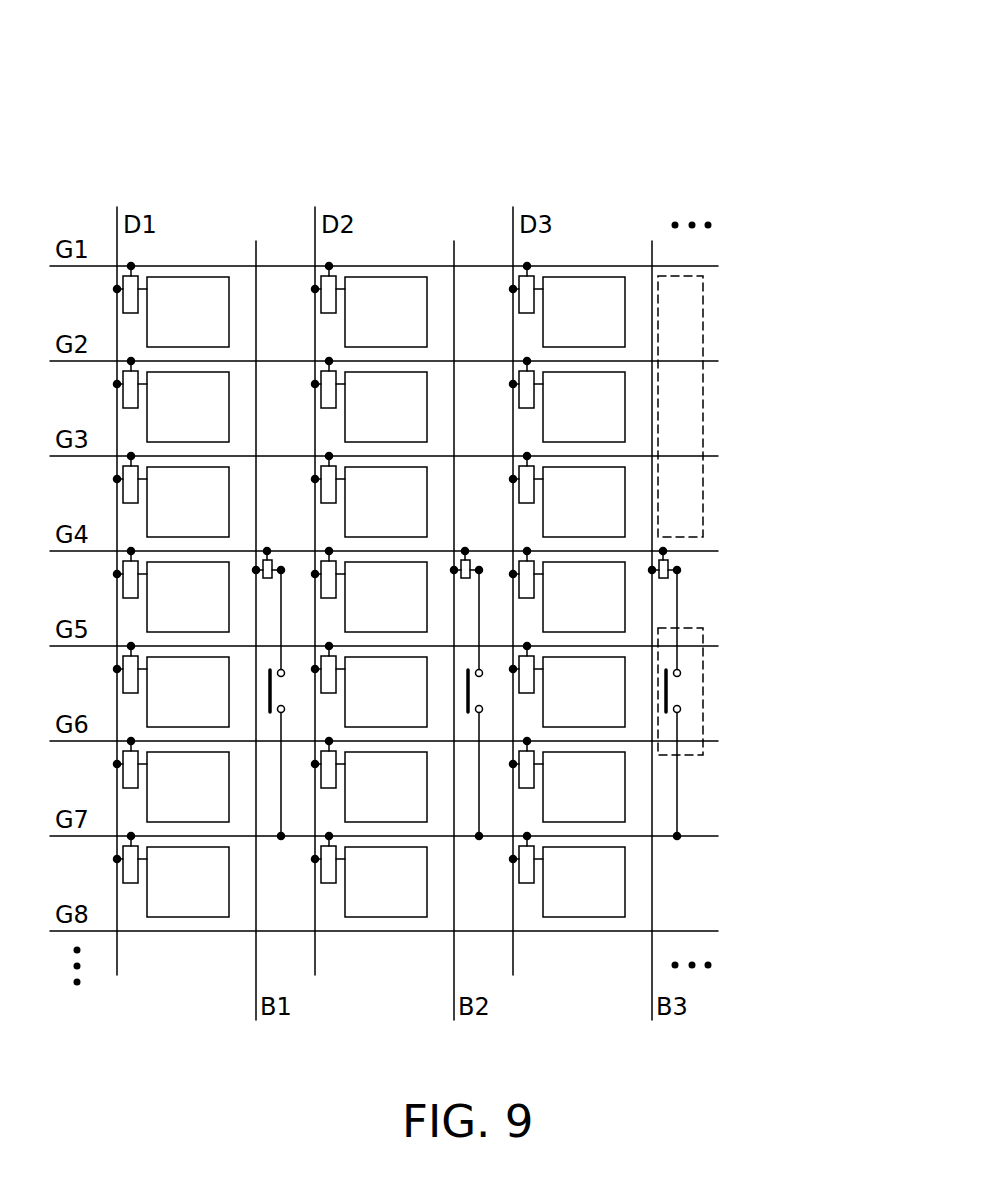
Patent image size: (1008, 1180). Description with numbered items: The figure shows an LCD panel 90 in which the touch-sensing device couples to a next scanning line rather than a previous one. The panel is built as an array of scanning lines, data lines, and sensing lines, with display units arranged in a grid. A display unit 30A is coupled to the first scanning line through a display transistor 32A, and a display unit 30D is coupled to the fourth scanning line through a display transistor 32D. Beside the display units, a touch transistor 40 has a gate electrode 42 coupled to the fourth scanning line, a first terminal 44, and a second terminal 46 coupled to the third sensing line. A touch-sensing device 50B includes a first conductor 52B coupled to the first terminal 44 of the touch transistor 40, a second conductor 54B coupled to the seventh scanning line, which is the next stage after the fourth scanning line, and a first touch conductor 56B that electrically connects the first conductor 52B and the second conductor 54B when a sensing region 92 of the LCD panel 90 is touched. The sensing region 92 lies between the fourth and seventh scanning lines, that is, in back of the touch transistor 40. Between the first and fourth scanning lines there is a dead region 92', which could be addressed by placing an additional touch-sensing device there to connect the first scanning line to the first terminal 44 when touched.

The LCD panel 90 is at (195, 70).
The display unit 30A is at (600, 290).
The display transistor 32A is at (541, 268).
The display unit 30D is at (603, 572).
The display transistor 32D is at (532, 568).
The touch transistor 40 is at (748, 571).
The gate electrode 42 is at (673, 542).
The first terminal 44 is at (728, 574).
The second terminal 46 is at (658, 580).
The touch-sensing device 50B is at (778, 694).
The first conductor 52B is at (695, 671).
The second conductor 54B is at (740, 730).
The first touch conductor 56B is at (680, 693).
The sensing region 92 is at (723, 714).
The dead region 92' is at (726, 406).